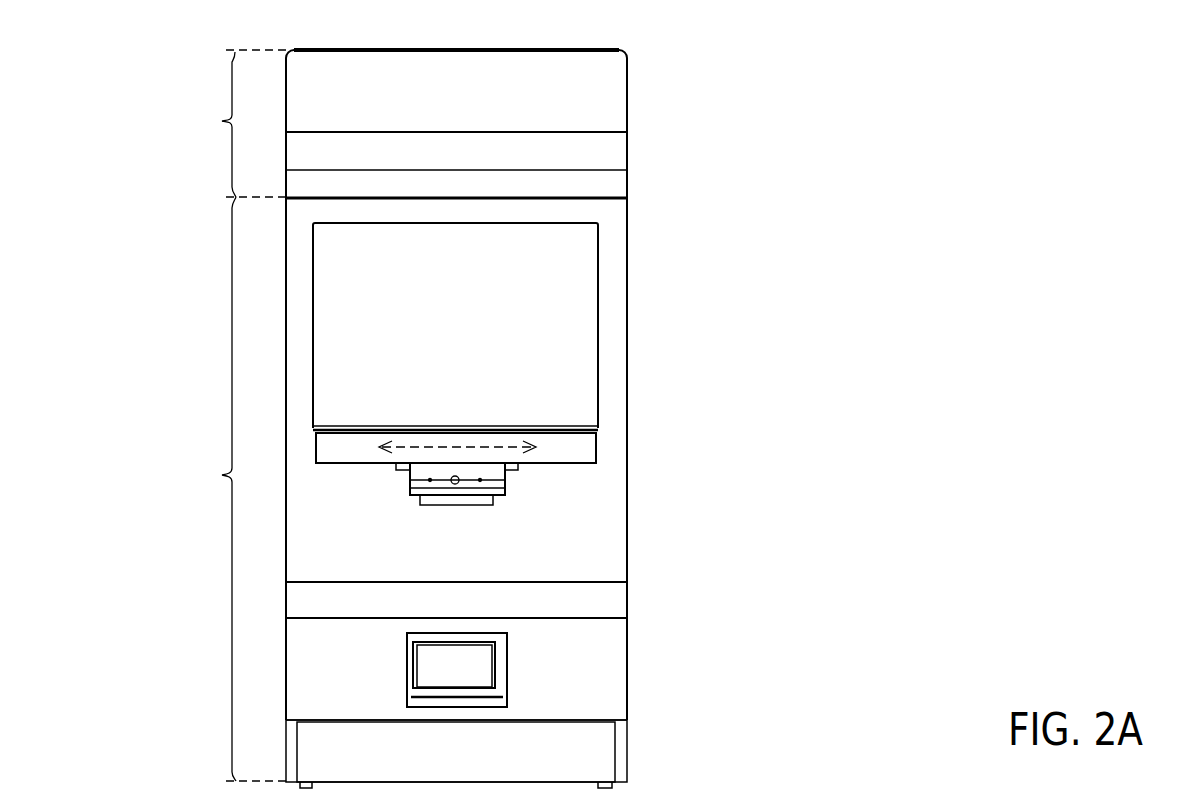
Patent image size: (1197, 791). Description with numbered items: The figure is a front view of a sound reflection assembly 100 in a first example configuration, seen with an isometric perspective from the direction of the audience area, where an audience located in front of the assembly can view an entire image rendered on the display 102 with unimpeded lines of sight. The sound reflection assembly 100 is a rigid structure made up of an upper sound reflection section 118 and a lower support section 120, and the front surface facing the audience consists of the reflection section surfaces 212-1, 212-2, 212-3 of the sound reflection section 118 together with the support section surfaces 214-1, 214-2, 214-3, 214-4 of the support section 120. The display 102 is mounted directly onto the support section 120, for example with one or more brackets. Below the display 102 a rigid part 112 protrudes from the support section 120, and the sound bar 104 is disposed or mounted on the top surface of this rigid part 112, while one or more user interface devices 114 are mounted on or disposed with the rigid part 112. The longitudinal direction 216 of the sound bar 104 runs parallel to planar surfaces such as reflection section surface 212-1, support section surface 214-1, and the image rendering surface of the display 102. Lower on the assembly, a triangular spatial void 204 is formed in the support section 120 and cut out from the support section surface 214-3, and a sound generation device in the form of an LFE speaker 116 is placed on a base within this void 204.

The sound reflection assembly 100 is at (462, 50).
The display 102 is at (568, 328).
The sound bar 104 is at (597, 432).
The rigid part 112 is at (465, 507).
The user interface devices 114 is at (410, 483).
The LFE speaker 116 is at (433, 660).
The sound reflection section 118 is at (230, 123).
The support section 120 is at (229, 489).
The triangular spatial void 204 is at (507, 660).
The reflection section surface 212-1 is at (591, 106).
The reflection section surface 212-2 is at (591, 150).
The reflection section surface 212-3 is at (591, 183).
The support section surface 214-1 is at (590, 548).
The support section surface 214-2 is at (590, 595).
The support section surface 214-3 is at (588, 688).
The support section surface 214-4 is at (588, 752).
The longitudinal direction 216 is at (450, 447).